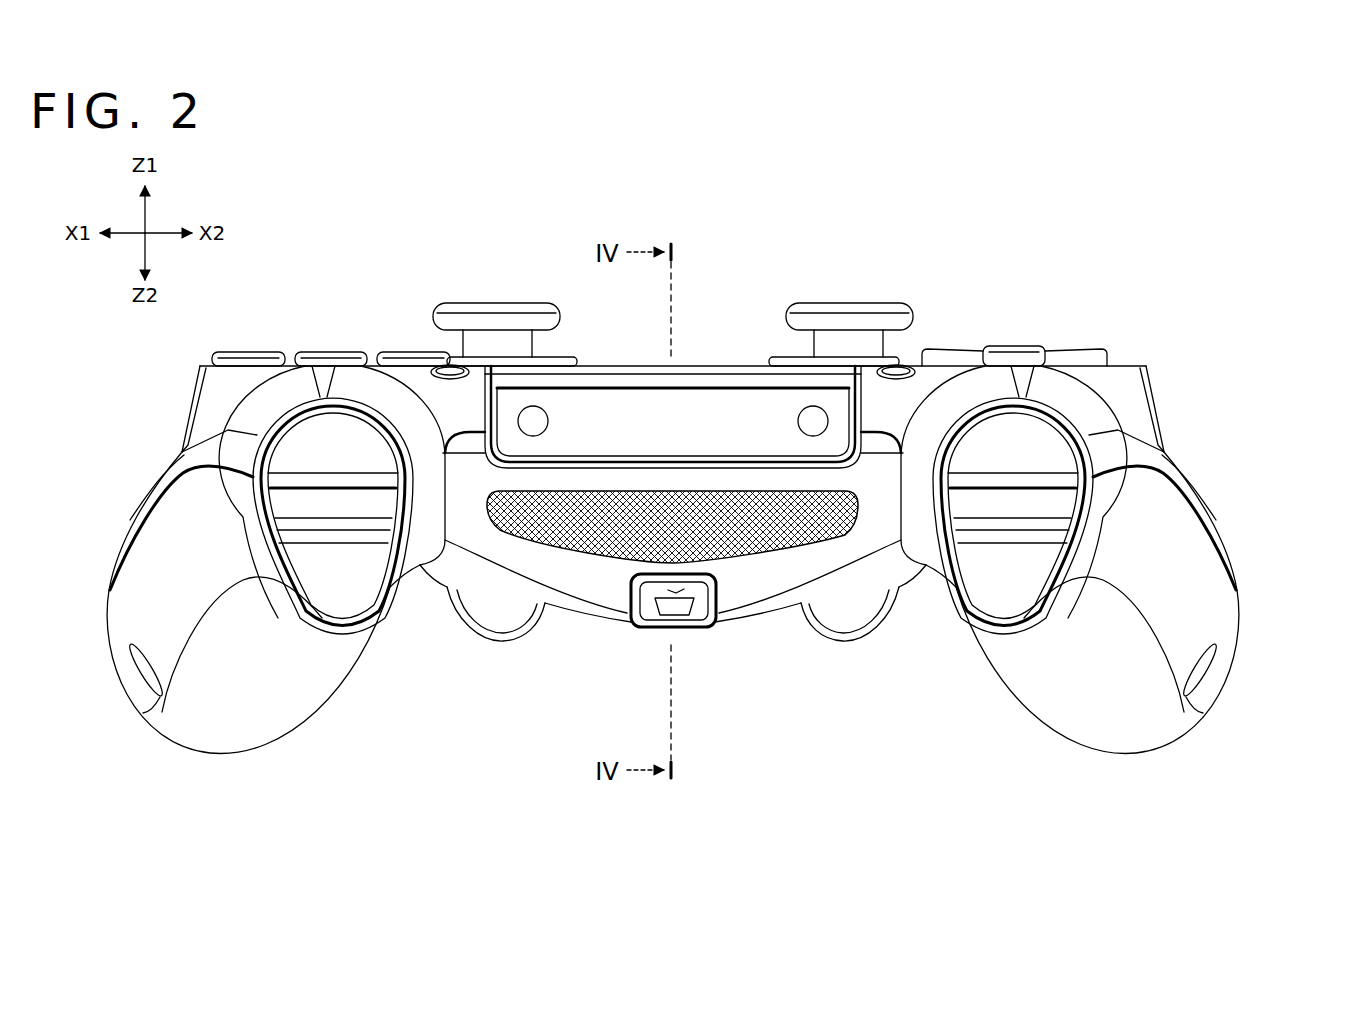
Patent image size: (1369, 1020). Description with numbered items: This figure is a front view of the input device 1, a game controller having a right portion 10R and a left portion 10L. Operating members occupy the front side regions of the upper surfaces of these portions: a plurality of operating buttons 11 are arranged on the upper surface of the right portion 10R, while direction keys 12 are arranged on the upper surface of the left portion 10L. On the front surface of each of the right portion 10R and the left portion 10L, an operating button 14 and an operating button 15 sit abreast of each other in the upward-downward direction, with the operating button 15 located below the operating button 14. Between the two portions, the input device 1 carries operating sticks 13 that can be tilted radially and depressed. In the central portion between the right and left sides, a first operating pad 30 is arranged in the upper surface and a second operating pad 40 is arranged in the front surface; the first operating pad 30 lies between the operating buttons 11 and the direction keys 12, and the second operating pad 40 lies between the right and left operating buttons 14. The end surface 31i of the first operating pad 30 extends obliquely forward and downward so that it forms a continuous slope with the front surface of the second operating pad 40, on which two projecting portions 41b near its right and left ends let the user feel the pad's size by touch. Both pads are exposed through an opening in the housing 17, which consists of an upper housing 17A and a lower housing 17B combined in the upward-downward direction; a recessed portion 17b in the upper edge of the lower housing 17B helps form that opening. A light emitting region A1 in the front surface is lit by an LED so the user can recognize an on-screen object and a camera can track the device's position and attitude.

The input device 1 is at (942, 236).
The right portion 10R is at (120, 470).
The left portion 10L is at (1230, 500).
The operating buttons 11 is at (393, 348).
The direction keys 12 is at (1021, 347).
The operating sticks 13 is at (508, 302).
The operating button 14 is at (300, 430).
The operating button 15 is at (360, 597).
The housing 17 is at (1330, 542).
The upper housing 17A is at (1226, 530).
The lower housing 17B is at (1238, 630).
The recessed portion 17b is at (578, 452).
The first operating pad 30 is at (627, 380).
The end surface 31i is at (684, 380).
The second operating pad 40 is at (708, 412).
The projecting portions 41b is at (535, 420).
The light emitting region A1 is at (754, 545).